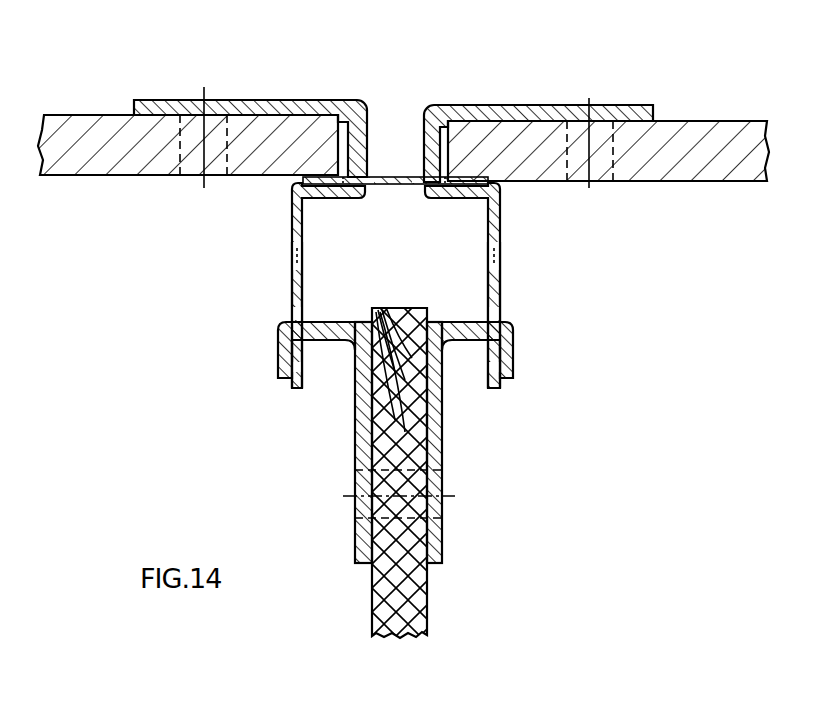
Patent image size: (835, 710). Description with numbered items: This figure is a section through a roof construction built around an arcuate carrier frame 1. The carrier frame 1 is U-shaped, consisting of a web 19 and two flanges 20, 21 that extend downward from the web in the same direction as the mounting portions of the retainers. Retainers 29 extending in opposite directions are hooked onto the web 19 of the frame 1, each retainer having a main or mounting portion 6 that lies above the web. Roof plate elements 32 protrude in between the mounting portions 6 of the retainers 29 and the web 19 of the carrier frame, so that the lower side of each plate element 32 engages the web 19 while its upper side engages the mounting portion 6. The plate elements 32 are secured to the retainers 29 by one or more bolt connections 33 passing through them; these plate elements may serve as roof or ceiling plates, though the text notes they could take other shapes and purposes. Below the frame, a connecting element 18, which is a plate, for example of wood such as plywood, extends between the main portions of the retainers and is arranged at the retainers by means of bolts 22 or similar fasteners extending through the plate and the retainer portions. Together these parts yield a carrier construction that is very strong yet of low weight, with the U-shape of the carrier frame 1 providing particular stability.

The carrier frame 1 is at (278, 279).
The main portion 6 is at (252, 100).
The connecting element 18 is at (385, 592).
The web 19 is at (386, 176).
The flange 20 is at (278, 227).
The flange 21 is at (519, 282).
The bolt 22 is at (460, 497).
The retainer 29 is at (289, 89).
The roof plate element 32 is at (83, 120).
The bolt connection 33 is at (204, 87).